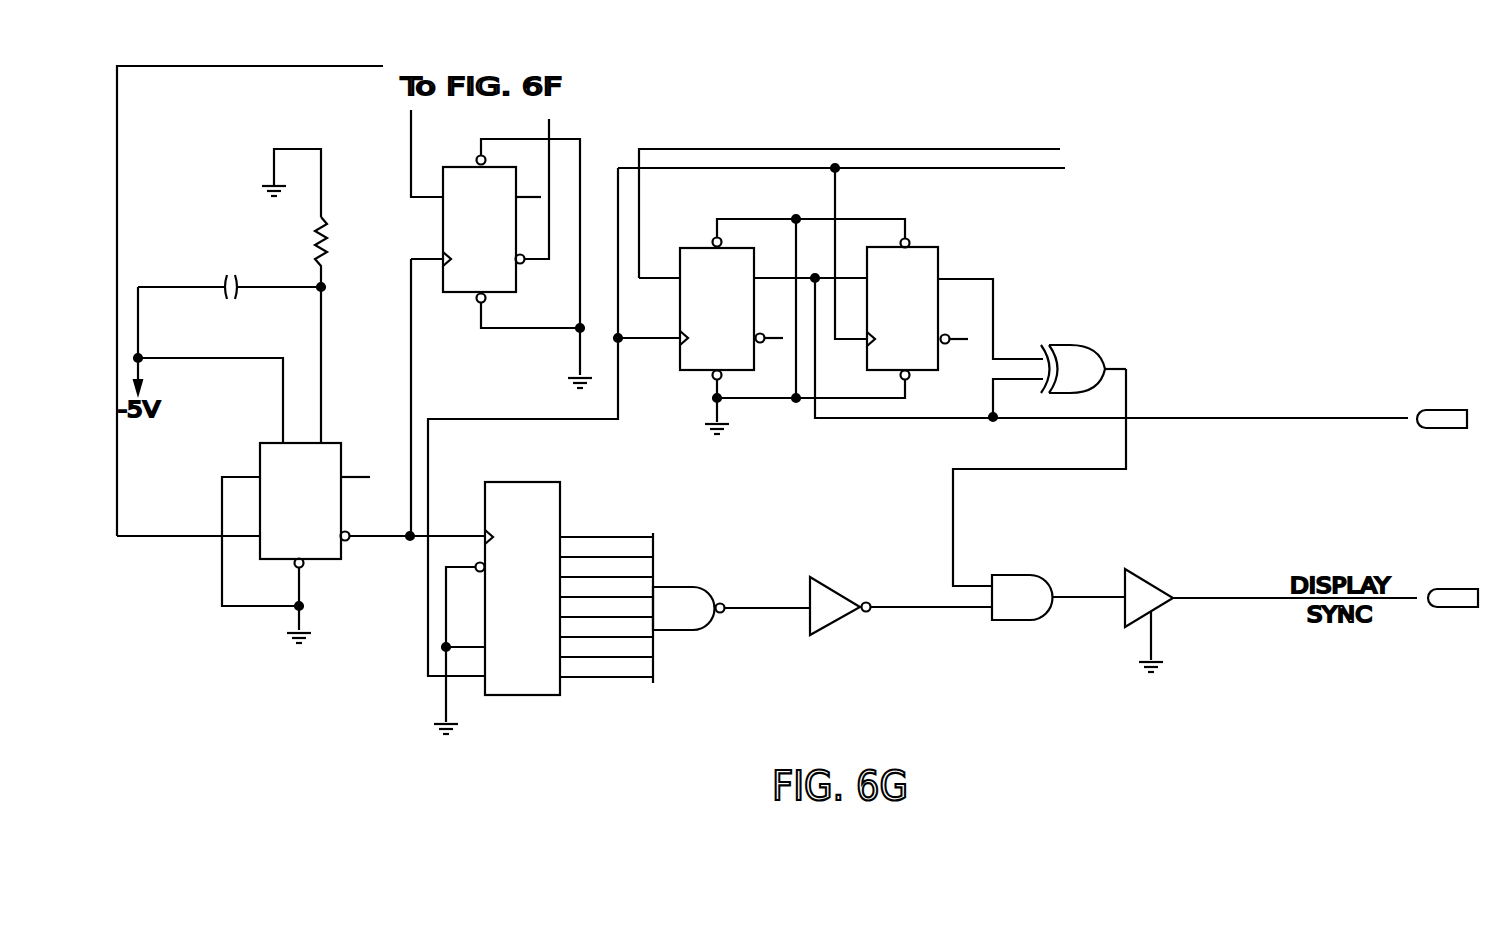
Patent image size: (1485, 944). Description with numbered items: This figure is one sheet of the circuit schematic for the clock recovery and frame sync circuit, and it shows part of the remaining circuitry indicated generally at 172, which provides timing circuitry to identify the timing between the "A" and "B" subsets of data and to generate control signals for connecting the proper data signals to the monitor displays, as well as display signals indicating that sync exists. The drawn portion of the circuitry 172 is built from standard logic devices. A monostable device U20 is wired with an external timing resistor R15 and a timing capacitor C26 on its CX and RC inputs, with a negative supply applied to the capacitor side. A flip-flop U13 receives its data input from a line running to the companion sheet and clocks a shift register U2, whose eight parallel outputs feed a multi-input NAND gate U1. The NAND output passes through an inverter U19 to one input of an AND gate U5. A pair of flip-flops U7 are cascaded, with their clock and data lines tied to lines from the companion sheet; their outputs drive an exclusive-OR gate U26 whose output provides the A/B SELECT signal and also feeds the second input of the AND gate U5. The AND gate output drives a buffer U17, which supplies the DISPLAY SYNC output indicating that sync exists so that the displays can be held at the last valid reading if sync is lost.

The timing circuitry 172 is at (772, 133).
The LS123 monostable multivibrator U20 is at (305, 505).
The LS74 flip-flop U13 is at (484, 229).
The LS74 dual flip-flop U7 is at (815, 309).
The LS164 shift register U2 is at (518, 587).
The LS30 NAND gate U1 is at (689, 633).
The LS04 inverter U19 is at (851, 623).
The LS08 AND gate U5 is at (1024, 622).
The LS126A buffer U17 is at (1182, 617).
The LS86 exclusive-OR gate U26 is at (1073, 342).
The 6.8K resistor R15 is at (350, 330).
The 100pF capacitor C26 is at (229, 302).